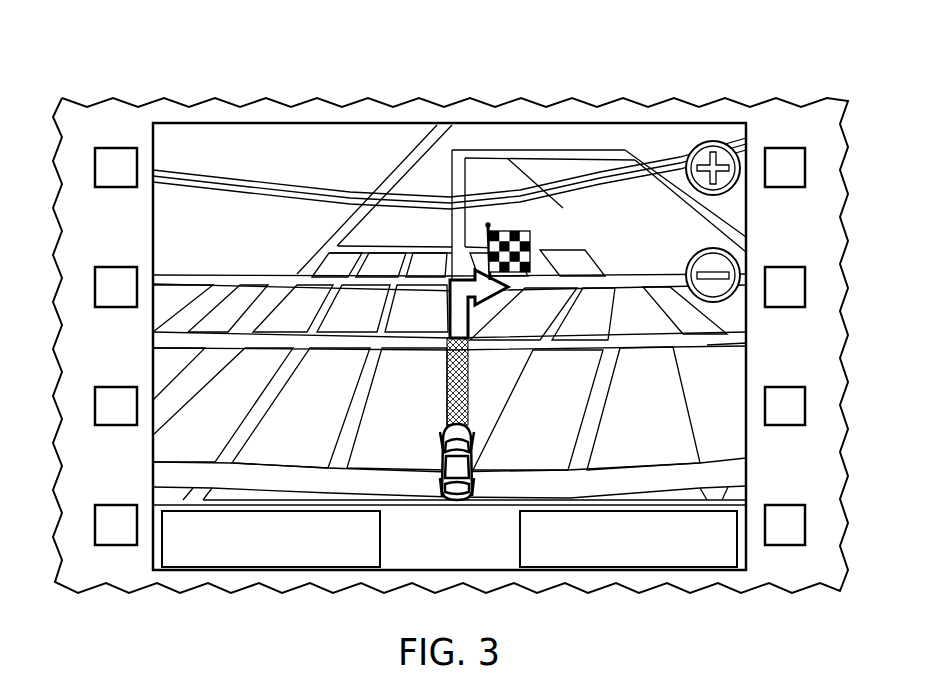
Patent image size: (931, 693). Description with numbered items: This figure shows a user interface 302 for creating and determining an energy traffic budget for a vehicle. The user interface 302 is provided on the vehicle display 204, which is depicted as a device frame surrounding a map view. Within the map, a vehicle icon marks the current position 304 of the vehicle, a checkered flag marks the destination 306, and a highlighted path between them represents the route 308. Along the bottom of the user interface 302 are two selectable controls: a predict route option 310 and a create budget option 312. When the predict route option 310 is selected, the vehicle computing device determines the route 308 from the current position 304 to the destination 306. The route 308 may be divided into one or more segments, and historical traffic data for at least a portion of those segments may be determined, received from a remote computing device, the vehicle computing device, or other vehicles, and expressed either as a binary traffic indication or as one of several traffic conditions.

The vehicle display 204 is at (712, 75).
The user interface 302 is at (628, 123).
The current position 304 is at (477, 447).
The destination 306 is at (532, 238).
The route 308 is at (447, 400).
The predict route option 310 is at (285, 567).
The create budget option 312 is at (640, 567).